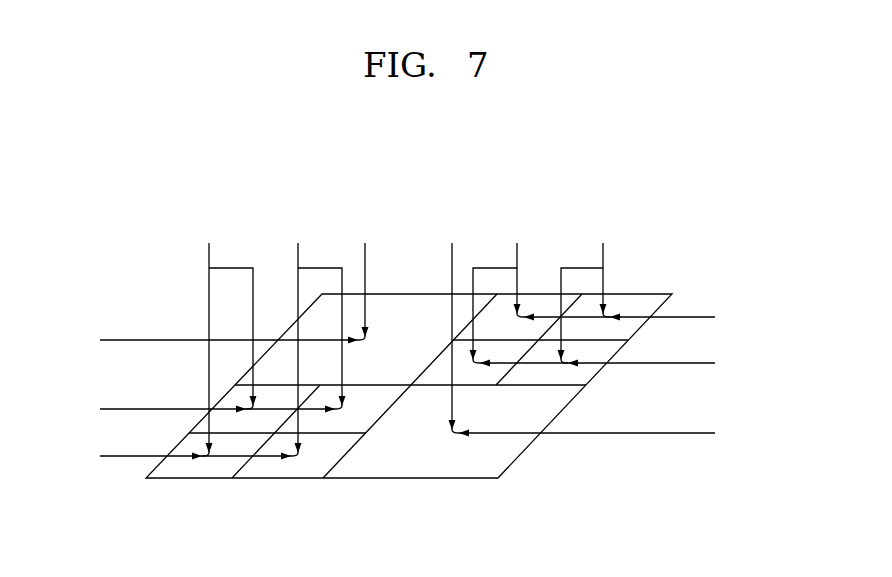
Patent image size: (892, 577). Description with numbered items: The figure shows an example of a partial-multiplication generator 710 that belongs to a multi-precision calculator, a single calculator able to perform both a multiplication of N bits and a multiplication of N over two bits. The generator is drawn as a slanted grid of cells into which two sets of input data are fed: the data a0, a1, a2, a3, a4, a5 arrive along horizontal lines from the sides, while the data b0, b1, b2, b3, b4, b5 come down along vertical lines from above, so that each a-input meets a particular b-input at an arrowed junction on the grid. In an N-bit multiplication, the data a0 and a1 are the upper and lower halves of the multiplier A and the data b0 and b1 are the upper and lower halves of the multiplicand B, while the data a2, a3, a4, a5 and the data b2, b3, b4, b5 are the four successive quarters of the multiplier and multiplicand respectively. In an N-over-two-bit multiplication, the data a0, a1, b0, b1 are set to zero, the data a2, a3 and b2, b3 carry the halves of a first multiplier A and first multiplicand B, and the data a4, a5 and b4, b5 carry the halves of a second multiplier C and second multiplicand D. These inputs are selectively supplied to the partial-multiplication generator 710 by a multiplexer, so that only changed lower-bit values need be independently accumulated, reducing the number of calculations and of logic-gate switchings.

The partial-multiplication generator 710 is at (413, 301).
The data a0 is at (602, 435).
The data a1 is at (217, 340).
The data a2 is at (184, 455).
The data a3 is at (206, 410).
The data a4 is at (612, 365).
The data a5 is at (634, 318).
The data b0 is at (364, 275).
The data b1 is at (451, 322).
The data b2 is at (226, 333).
The data b3 is at (315, 333).
The data b4 is at (500, 287).
The data b5 is at (587, 287).